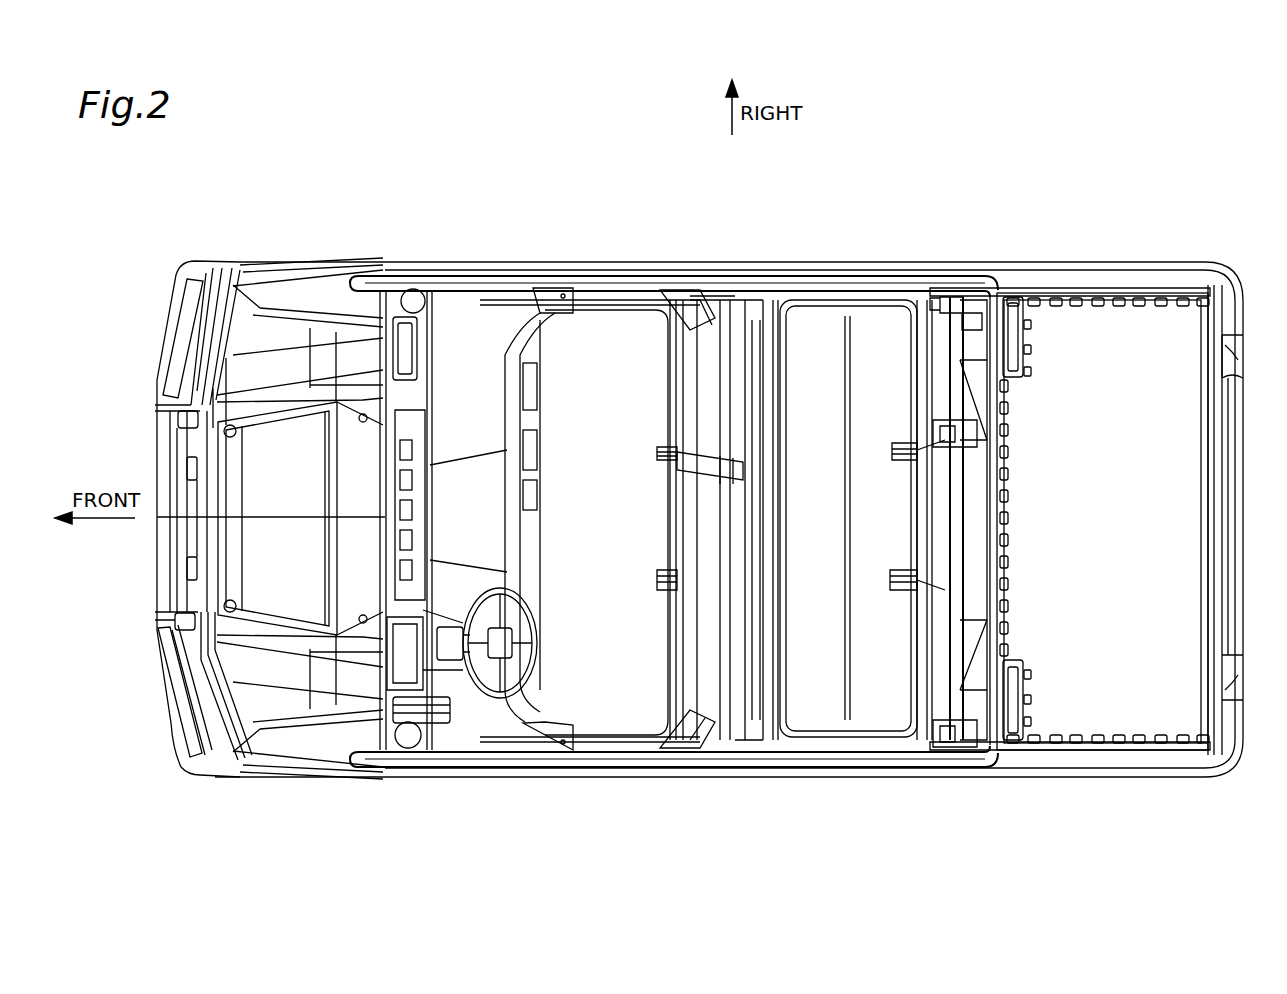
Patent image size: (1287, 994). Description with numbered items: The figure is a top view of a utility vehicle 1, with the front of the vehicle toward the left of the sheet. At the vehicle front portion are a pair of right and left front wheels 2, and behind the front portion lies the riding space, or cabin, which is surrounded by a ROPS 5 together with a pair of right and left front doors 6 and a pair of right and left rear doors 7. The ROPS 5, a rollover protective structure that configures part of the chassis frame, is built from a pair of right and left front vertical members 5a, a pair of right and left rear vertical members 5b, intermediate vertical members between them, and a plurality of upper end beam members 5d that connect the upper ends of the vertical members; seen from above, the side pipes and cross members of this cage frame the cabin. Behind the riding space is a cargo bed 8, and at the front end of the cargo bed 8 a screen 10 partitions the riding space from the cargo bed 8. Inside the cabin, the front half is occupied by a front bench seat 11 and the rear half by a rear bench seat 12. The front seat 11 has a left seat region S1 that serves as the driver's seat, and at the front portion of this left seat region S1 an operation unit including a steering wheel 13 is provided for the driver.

The utility vehicle 1 is at (1206, 207).
The front wheels 2 is at (220, 263).
The ROPS 5 is at (898, 240).
The front vertical members 5a is at (432, 265).
The rear vertical members 5b is at (948, 268).
The upper end beam members 5d is at (705, 263).
The front doors 6 is at (568, 265).
The rear doors 7 is at (803, 268).
The cargo bed 8 is at (1102, 352).
The screen 10 is at (990, 683).
The front bench seat 11 is at (604, 352).
The rear bench seat 12 is at (846, 352).
The steering wheel 13 is at (473, 693).
The left seat region S1 is at (612, 645).